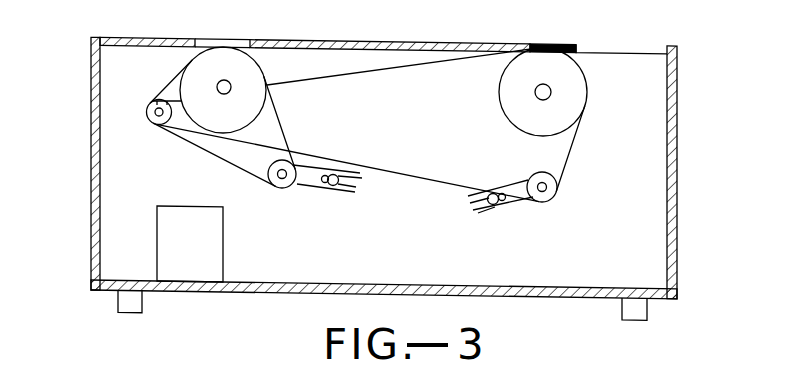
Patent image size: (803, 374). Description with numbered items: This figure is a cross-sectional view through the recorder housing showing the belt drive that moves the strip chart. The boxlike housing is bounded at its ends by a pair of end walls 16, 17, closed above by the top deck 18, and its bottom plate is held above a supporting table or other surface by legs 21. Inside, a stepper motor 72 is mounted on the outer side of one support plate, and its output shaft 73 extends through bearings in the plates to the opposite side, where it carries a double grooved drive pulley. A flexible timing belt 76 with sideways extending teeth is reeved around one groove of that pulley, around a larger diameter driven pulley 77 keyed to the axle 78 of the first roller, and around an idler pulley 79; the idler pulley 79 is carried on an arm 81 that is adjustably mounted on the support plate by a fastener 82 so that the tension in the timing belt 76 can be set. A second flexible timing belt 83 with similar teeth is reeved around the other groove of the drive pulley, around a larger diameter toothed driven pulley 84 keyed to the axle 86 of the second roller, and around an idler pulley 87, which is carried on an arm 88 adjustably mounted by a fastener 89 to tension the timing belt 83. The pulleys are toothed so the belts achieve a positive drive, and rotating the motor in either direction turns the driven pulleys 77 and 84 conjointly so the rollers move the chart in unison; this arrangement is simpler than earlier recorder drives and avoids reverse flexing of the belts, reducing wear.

The end wall 16 is at (91, 172).
The end wall 17 is at (677, 174).
The top deck 18 is at (317, 41).
The legs 21 is at (142, 301).
The stepper motor 72 is at (148, 110).
The output shaft 73 is at (151, 124).
The timing belt 76 is at (208, 152).
The driven pulley 77 is at (192, 63).
The axle 78 is at (229, 93).
The idler pulley 79 is at (283, 189).
The arm 81 is at (312, 184).
The fastener 82 is at (364, 187).
The second timing belt 83 is at (385, 170).
The driven pulley 84 is at (572, 84).
The axle 86 is at (545, 84).
The idler pulley 87 is at (552, 198).
The arm 88 is at (520, 184).
The fastener 89 is at (484, 210).